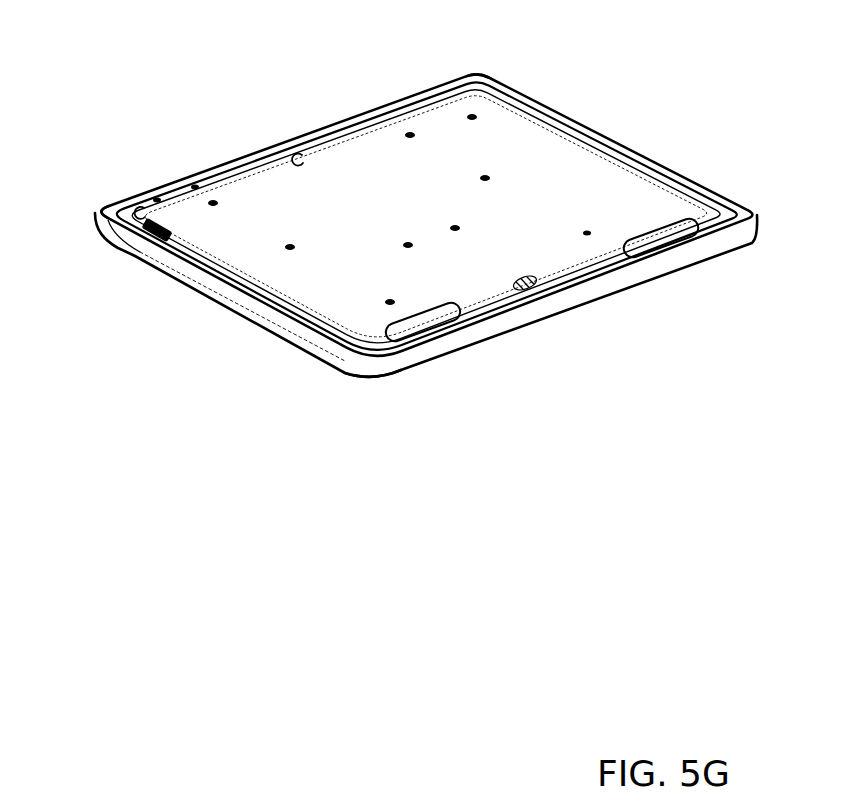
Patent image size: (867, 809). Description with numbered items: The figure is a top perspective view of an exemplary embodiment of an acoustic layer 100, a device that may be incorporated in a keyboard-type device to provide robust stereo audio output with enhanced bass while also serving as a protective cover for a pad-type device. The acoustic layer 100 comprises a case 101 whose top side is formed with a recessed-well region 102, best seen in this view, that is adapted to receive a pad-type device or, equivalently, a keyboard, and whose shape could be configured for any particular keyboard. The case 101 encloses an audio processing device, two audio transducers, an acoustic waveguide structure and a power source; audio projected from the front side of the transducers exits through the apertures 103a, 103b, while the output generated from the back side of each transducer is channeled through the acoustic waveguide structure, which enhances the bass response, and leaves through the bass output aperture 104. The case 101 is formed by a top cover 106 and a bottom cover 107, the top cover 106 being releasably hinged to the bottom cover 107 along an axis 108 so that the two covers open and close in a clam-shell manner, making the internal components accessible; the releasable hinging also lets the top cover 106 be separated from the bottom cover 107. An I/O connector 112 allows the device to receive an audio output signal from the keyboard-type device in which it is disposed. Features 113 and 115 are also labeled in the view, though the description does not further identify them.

The acoustic layer 100 is at (233, 110).
The case 101 is at (560, 110).
The recessed-well region 102 is at (452, 135).
The aperture 103a is at (430, 322).
The aperture 103b is at (662, 243).
The bass output aperture 104 is at (545, 285).
The top cover 106 is at (253, 308).
The bottom cover 107 is at (317, 357).
The axis 108 is at (82, 226).
The I/O connector 112 is at (598, 140).
The latch feature 113 is at (150, 210).
The bottom corner edge 115 is at (408, 372).